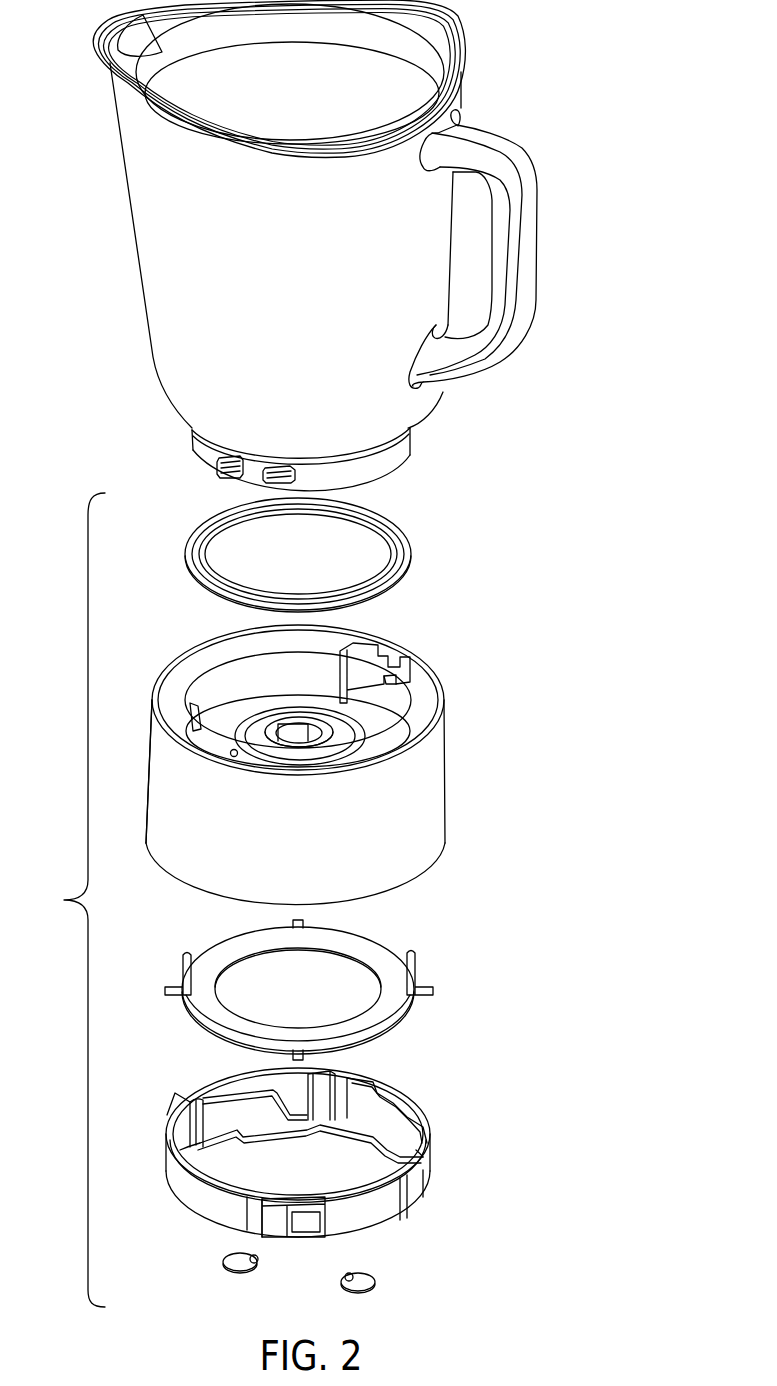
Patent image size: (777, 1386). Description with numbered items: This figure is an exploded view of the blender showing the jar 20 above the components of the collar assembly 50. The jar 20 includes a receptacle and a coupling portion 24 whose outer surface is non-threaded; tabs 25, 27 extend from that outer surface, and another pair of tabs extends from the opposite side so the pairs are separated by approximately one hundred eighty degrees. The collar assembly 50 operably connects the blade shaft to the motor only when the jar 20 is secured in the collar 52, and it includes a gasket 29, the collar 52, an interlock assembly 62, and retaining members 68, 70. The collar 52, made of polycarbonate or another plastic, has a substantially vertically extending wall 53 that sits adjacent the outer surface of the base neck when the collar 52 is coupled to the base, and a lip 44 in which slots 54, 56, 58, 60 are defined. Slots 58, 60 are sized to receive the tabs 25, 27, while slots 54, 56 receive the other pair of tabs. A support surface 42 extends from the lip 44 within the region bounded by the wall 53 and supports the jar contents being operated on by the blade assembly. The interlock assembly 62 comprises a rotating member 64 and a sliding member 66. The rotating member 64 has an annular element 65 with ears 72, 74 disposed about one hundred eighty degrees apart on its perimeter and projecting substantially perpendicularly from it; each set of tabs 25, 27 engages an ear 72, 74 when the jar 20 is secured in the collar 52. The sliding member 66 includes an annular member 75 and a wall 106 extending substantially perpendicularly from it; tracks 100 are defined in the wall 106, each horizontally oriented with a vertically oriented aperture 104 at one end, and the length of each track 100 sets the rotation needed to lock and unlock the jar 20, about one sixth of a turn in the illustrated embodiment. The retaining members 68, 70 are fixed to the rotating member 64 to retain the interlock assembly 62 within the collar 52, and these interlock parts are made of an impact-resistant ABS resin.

The jar 20 is at (551, 246).
The coupling portion 24 is at (372, 462).
The tab 25 is at (233, 462).
The tab 27 is at (276, 468).
The gasket 29 is at (400, 578).
The support surface 42 is at (367, 740).
The lip 44 is at (195, 667).
The collar assembly 50 is at (69, 900).
The collar 52 is at (295, 754).
The wall 53 is at (163, 820).
The slot 54 is at (370, 660).
The slot 56 is at (386, 672).
The slot 58 is at (197, 735).
The slot 60 is at (234, 758).
The interlock assembly 62 is at (317, 1164).
The rotating member 64 is at (296, 985).
The annular element 65 is at (380, 1013).
The sliding member 66 is at (384, 1214).
The retaining member 68 is at (222, 1260).
The retaining member 70 is at (374, 1286).
The ear 72 is at (182, 968).
The ear 74 is at (416, 970).
The annular member 75 is at (203, 1155).
The track 100 is at (322, 1213).
The aperture 104 is at (303, 1215).
The wall 106 is at (185, 1188).